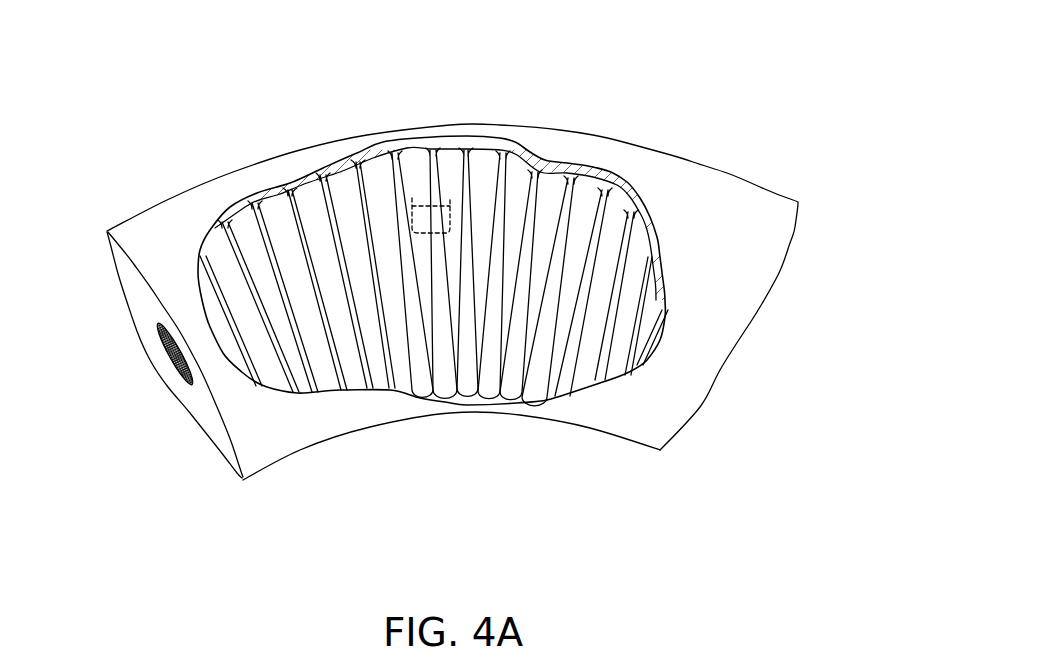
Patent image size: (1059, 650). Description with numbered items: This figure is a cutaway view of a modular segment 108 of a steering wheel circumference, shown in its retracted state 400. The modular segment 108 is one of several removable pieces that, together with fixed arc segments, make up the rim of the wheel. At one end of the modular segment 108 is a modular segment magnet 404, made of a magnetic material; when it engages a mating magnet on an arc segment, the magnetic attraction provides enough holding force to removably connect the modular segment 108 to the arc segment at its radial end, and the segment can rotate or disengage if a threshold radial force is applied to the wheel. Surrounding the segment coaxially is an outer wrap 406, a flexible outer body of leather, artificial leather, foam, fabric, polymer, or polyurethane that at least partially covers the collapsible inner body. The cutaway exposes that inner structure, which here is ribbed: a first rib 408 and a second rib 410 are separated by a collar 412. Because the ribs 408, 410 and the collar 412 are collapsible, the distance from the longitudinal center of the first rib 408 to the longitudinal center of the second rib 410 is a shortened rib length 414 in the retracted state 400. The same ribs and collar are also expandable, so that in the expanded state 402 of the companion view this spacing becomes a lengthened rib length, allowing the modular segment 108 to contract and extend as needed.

The retracted state 400 is at (822, 96).
The expanded state 402 is at (508, 439).
The modular segment magnet 404 is at (167, 353).
The outer wrap 406 is at (660, 152).
The first rib 408 is at (378, 158).
The second rib 410 is at (450, 157).
The collar 412 is at (413, 157).
The shortened rib length 414 is at (455, 274).
The modular segment 108 is at (778, 277).